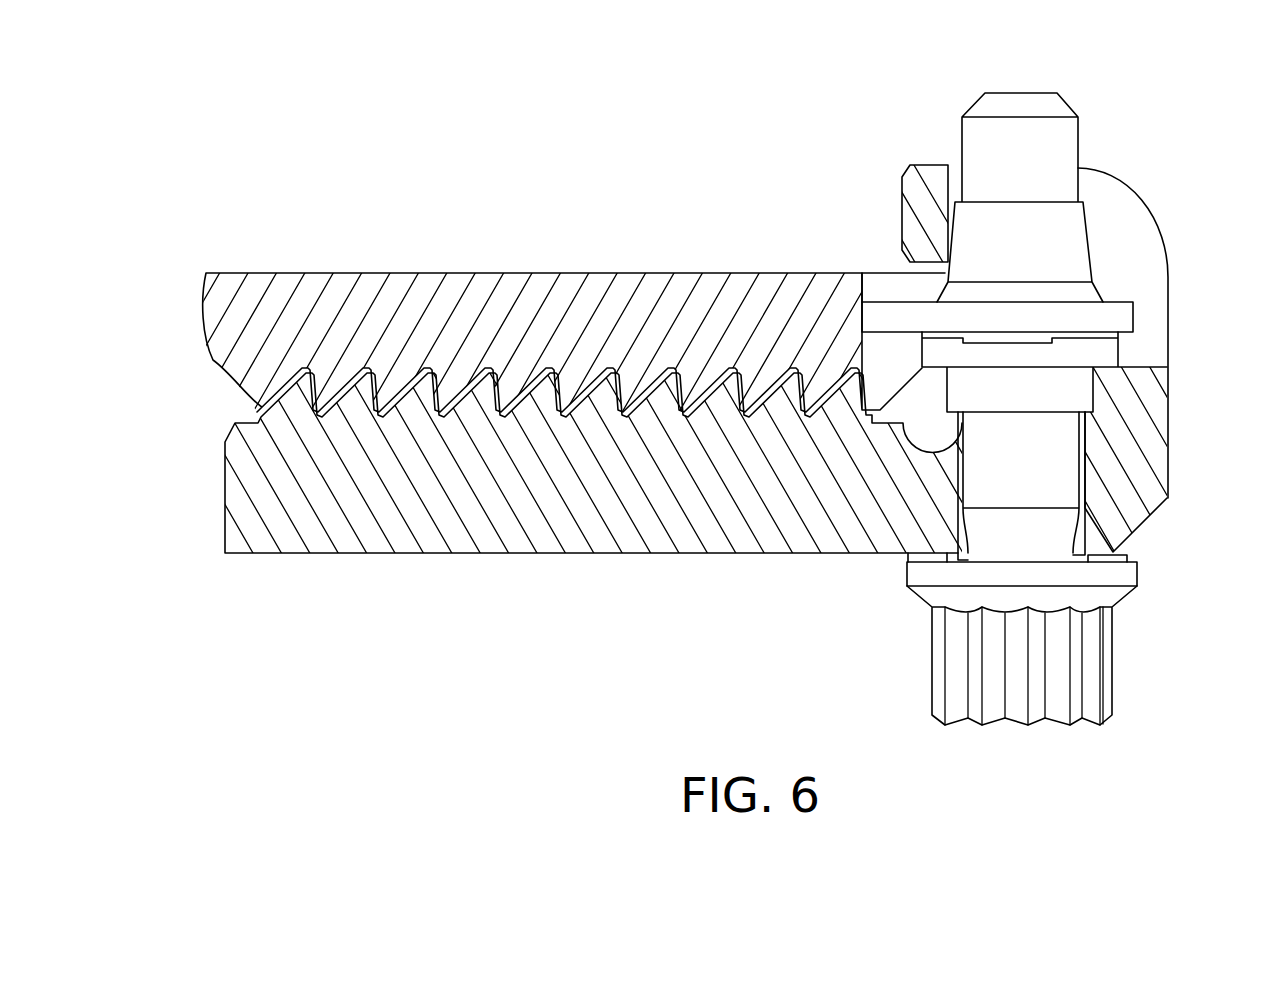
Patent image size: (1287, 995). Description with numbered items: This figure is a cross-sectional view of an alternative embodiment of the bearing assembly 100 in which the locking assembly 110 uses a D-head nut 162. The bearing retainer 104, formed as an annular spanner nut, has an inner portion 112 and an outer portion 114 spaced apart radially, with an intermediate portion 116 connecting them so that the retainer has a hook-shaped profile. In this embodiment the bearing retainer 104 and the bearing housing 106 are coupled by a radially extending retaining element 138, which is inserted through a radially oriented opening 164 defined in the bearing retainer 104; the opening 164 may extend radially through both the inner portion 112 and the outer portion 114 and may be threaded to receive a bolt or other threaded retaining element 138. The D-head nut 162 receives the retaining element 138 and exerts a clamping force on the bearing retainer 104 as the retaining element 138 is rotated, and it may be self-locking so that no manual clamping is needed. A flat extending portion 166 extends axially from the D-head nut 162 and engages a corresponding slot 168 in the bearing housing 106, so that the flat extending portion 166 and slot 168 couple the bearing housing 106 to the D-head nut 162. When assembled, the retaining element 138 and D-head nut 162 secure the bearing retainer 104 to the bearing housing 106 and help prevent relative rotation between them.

The bearing assembly 100 is at (1107, 112).
The bearing retainer 104 is at (427, 663).
The bearing housing 106 is at (438, 300).
The locking assembly 110 is at (1111, 754).
The inner portion 112 is at (651, 553).
The outer portion 114 is at (1130, 193).
The intermediate portion 116 is at (1168, 408).
The retaining element 138 is at (1122, 577).
The D-head nut 162 is at (990, 220).
The opening 164 is at (1100, 523).
The flat extending portion 166 is at (945, 285).
The slot 168 is at (907, 318).